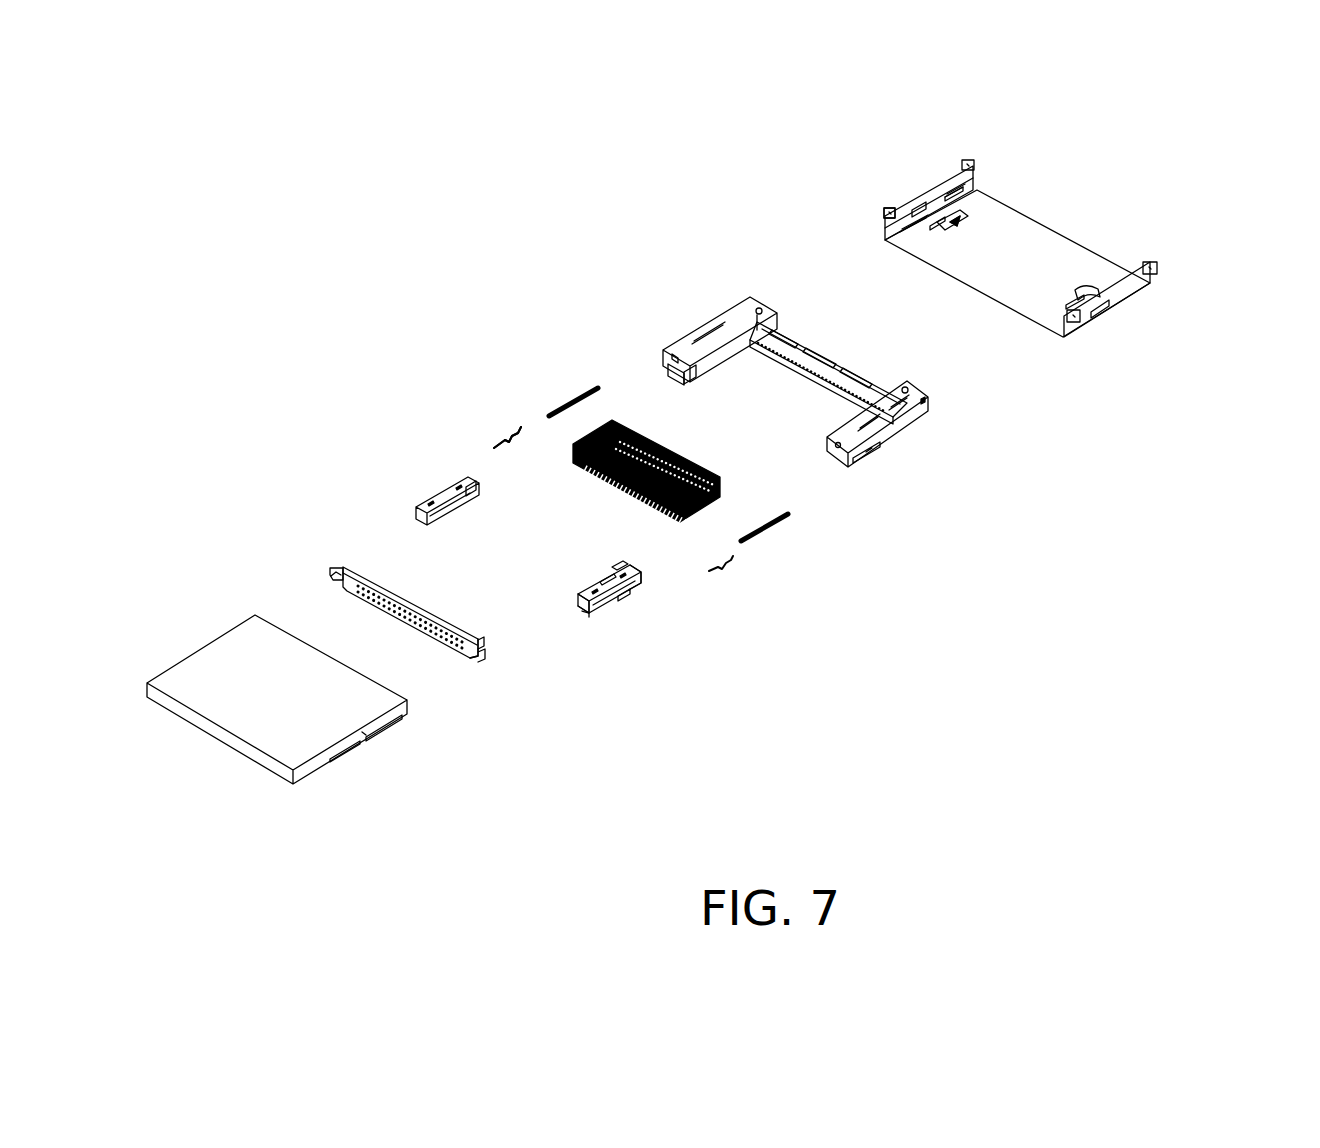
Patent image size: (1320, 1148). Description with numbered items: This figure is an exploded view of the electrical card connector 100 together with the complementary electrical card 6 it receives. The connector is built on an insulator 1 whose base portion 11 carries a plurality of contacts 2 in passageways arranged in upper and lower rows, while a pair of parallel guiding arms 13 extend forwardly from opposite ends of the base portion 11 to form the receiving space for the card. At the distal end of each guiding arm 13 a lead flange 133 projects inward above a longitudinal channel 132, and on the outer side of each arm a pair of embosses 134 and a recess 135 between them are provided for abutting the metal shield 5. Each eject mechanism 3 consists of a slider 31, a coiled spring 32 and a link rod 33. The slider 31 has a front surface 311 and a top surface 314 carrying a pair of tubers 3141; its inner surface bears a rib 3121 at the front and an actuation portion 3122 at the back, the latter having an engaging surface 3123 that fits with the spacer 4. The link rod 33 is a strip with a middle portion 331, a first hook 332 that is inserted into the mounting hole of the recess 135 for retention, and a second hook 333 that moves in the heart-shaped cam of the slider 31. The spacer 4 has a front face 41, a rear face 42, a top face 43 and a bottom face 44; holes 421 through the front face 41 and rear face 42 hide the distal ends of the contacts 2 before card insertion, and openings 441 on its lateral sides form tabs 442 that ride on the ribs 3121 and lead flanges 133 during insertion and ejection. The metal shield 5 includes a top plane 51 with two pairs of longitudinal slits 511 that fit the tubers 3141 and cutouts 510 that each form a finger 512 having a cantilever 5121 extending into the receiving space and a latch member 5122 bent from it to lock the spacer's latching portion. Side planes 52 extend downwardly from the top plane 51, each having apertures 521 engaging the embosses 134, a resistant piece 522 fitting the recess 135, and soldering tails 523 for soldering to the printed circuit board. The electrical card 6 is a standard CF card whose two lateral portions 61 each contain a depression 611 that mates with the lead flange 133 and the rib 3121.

The electrical card connector 100 is at (1229, 383).
The insulator 1 is at (698, 316).
The base portion 11 is at (840, 357).
The guiding arms 13 is at (711, 315).
The channel 132 is at (673, 366).
The lead flange 133 is at (692, 370).
The embosses 134 is at (913, 403).
The recess 135 is at (862, 443).
The contacts 2 is at (617, 413).
The eject mechanism 3 is at (548, 327).
The slider 31 is at (440, 497).
The front surface 311 is at (578, 614).
The rib 3121 is at (578, 606).
The actuation portion 3122 is at (477, 500).
The engaging surface 3123 is at (606, 578).
The top surface 314 is at (636, 573).
The tubers 3141 is at (623, 602).
The coiled spring 32 is at (572, 398).
The link rod 33 is at (728, 574).
The middle portion 331 is at (498, 447).
The first hook 332 is at (513, 440).
The second hook 333 is at (498, 449).
The spacer 4 is at (303, 524).
The front face 41 is at (330, 577).
The rear face 42 is at (407, 615).
The holes 421 is at (418, 631).
The top face 43 is at (362, 565).
The bottom face 44 is at (467, 660).
The openings 441 is at (480, 640).
The tabs 442 is at (482, 662).
The metal shield 5 is at (1048, 380).
The top plane 51 is at (1033, 247).
The cutouts 510 is at (940, 226).
The slits 511 is at (893, 244).
The finger 512 is at (956, 232).
The cantilever 5121 is at (938, 230).
The latch member 5122 is at (975, 192).
The side planes 52 is at (947, 190).
The apertures 521 is at (890, 210).
The resistant piece 522 is at (1107, 310).
The soldering tails 523 is at (963, 161).
The electrical card 6 is at (229, 622).
The lateral portions 61 is at (305, 773).
The depression 611 is at (390, 722).